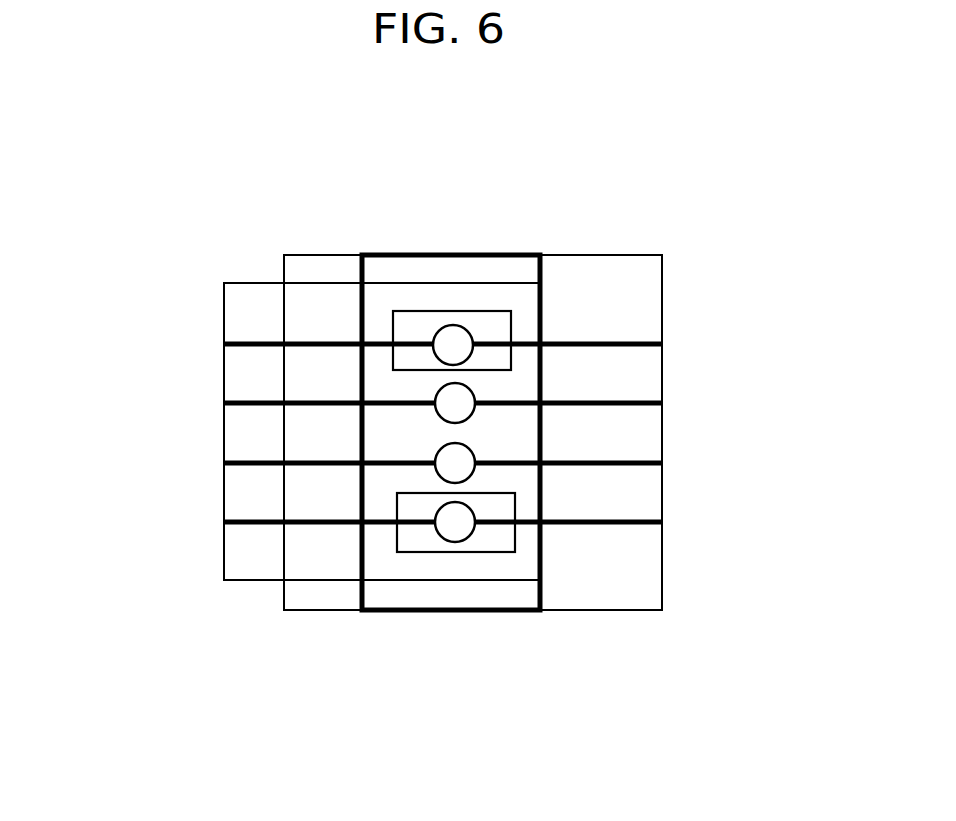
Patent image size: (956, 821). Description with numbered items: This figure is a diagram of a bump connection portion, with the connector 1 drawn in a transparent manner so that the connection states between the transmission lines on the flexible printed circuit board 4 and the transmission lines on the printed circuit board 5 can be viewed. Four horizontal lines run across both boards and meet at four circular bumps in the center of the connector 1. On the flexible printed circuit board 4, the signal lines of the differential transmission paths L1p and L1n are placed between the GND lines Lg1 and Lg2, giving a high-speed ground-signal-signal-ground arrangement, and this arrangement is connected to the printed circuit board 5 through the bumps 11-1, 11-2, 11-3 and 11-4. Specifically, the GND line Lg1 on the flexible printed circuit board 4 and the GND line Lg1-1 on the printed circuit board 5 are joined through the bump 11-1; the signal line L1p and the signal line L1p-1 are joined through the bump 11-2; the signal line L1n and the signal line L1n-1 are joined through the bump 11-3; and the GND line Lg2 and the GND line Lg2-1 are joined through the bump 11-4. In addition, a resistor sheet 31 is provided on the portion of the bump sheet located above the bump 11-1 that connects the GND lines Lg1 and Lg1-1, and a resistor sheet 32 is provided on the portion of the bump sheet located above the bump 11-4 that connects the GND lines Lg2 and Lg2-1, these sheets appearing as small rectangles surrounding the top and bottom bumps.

The connector 1 is at (520, 256).
The flexible printed circuit board 4 is at (313, 580).
The printed circuit board 5 is at (662, 606).
The resistor sheet 31 is at (512, 318).
The resistor sheet 32 is at (500, 553).
The bump 11-1 is at (448, 324).
The bump 11-2 is at (438, 393).
The bump 11-3 is at (474, 467).
The bump 11-4 is at (447, 541).
The GND line Lg1 is at (260, 343).
The GND line Lg1-1 is at (613, 340).
The signal line L1p is at (278, 400).
The signal line L1p-1 is at (615, 397).
The signal line L1n is at (270, 467).
The signal line L1n-1 is at (612, 457).
The GND line Lg2 is at (253, 525).
The GND line Lg2-1 is at (613, 517).